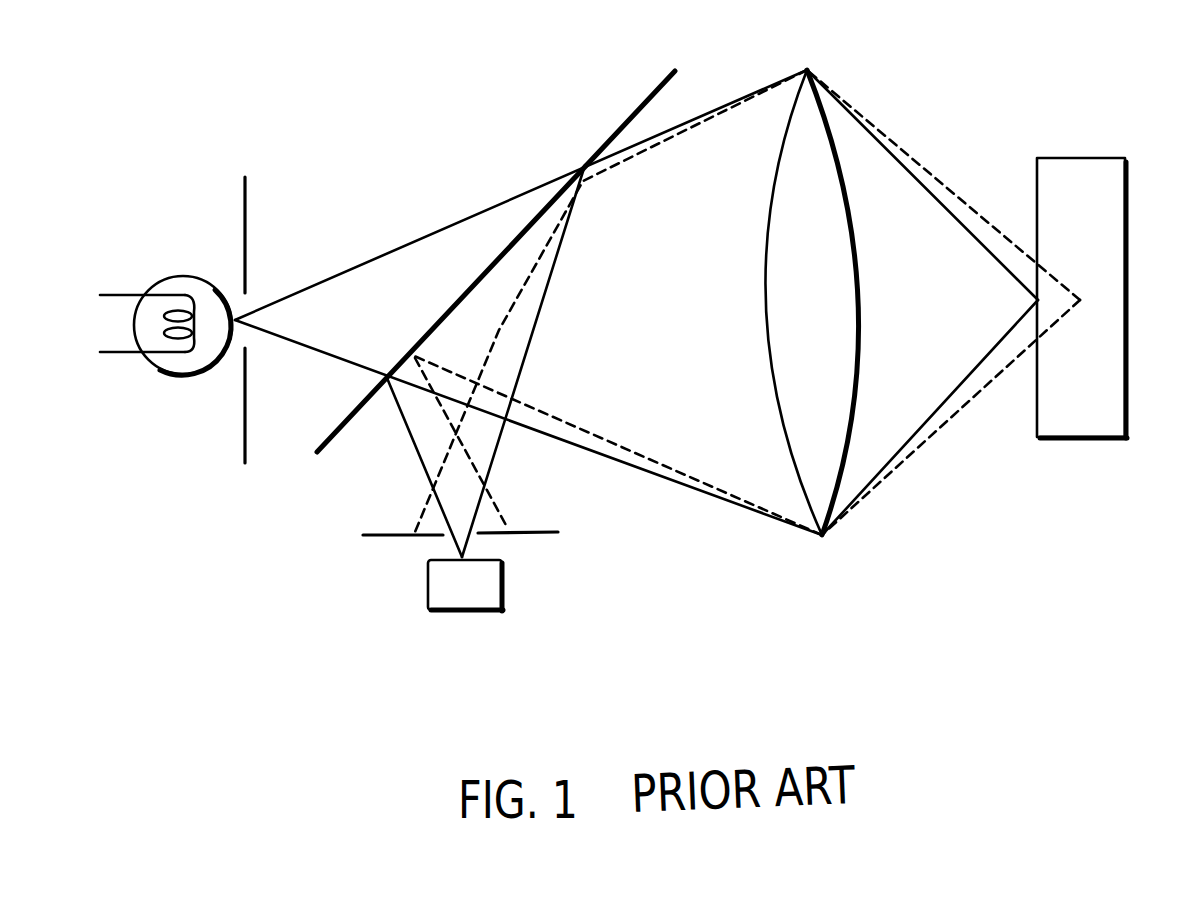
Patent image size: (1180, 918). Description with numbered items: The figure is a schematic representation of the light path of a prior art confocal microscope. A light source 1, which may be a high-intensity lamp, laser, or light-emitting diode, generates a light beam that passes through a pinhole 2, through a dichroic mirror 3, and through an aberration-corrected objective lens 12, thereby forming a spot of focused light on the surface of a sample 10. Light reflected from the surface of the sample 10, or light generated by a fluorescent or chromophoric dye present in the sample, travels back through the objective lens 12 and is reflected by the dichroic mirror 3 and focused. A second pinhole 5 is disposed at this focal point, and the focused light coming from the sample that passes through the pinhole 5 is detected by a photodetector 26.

The light source 1 is at (180, 276).
The pinhole 2 is at (244, 302).
The dichroic mirror 3 is at (670, 73).
The pinhole 5 is at (392, 538).
The photodetector 26 is at (473, 612).
The objective lens 12 is at (822, 540).
The sample 10 is at (1095, 440).